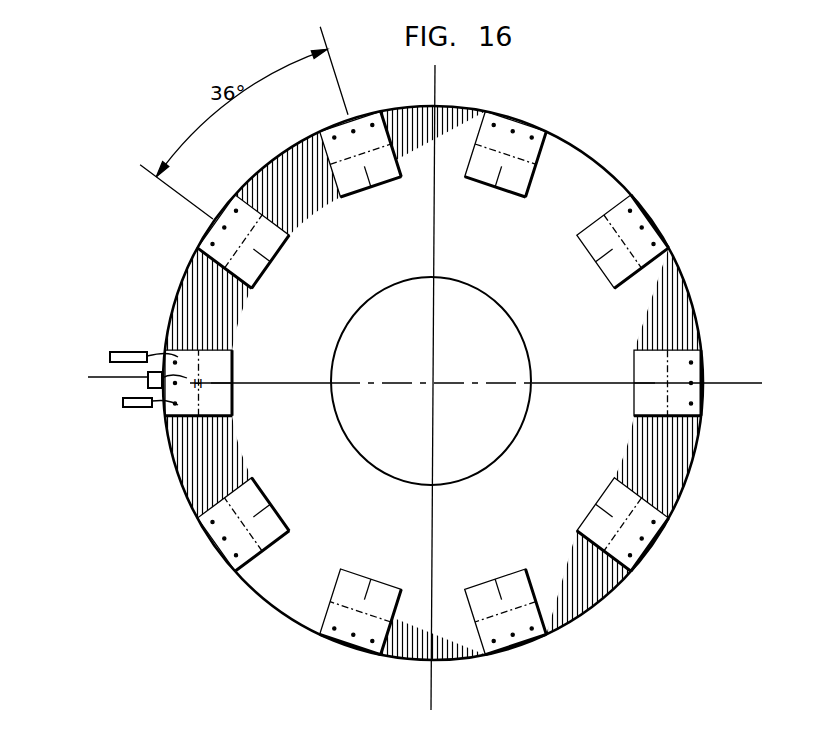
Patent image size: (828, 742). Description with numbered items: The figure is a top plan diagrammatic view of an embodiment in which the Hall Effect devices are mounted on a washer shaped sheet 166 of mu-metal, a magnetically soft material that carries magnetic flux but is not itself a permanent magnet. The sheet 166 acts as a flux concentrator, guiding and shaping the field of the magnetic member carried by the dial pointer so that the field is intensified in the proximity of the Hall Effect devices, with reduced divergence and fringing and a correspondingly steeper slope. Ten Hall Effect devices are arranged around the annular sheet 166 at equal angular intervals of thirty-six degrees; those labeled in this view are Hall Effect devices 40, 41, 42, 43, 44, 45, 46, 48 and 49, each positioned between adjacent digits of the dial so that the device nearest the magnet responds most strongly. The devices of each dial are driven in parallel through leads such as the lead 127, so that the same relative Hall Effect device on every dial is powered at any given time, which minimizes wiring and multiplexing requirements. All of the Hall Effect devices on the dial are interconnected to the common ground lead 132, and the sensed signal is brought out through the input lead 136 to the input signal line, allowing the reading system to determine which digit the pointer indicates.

The Hall Effect device 40 is at (523, 137).
The Hall Effect device 41 is at (650, 236).
The Hall Effect device 42 is at (690, 372).
The Hall Effect device 43 is at (657, 540).
The Hall Effect device 44 is at (528, 634).
The Hall Effect device 45 is at (345, 638).
The Hall Effect device 46 is at (218, 526).
The Hall Effect device 48 is at (228, 210).
The Hall Effect device 49 is at (363, 128).
The washer shaped sheet of mu-metal 166 is at (598, 165).
The lead 127 is at (128, 352).
The ground lead 132 is at (148, 382).
The input lead 136 is at (134, 407).